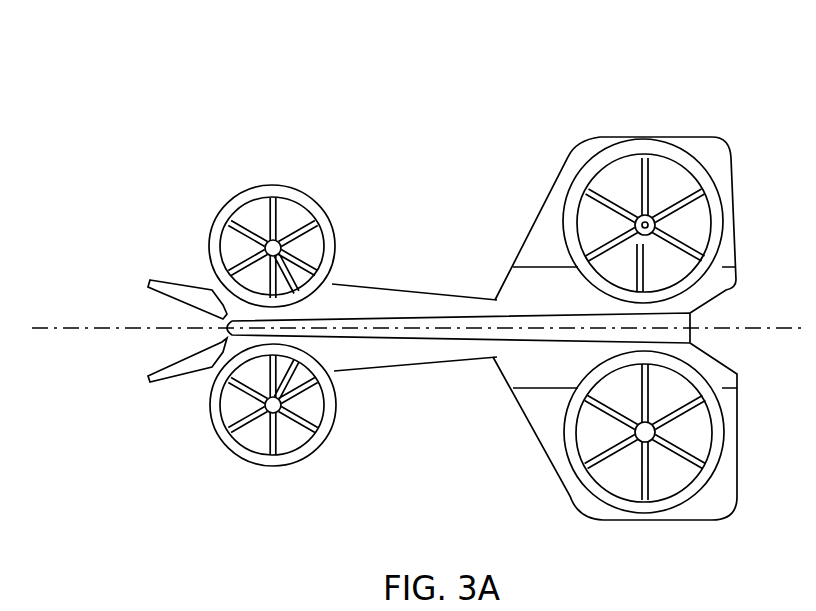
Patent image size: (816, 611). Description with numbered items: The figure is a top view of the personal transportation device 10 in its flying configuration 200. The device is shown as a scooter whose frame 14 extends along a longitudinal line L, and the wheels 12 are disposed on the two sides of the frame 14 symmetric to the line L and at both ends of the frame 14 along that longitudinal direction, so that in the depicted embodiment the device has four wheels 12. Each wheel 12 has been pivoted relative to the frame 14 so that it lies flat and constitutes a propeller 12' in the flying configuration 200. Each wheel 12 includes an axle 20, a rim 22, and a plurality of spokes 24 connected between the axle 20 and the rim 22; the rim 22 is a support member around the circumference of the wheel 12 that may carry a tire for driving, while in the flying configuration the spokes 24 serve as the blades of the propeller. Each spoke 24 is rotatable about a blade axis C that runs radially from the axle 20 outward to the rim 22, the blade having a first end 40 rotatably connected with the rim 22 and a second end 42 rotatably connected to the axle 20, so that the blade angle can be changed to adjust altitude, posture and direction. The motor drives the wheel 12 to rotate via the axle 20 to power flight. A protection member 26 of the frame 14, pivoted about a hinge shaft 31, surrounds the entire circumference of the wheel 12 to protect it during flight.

The personal transportation device 10 is at (708, 39).
The flying configuration 200 is at (551, 102).
The wheel 12 is at (289, 319).
The propeller 12' is at (675, 187).
The frame 14 is at (397, 296).
The axle 20 is at (657, 231).
The rim 22 is at (690, 280).
The spokes 24 is at (661, 208).
The protection member 26 is at (705, 491).
The hinge shaft 31 is at (543, 267).
The first end 40 is at (651, 162).
The second end 42 is at (656, 223).
The blade axis C is at (648, 134).
The longitudinal line L is at (410, 328).